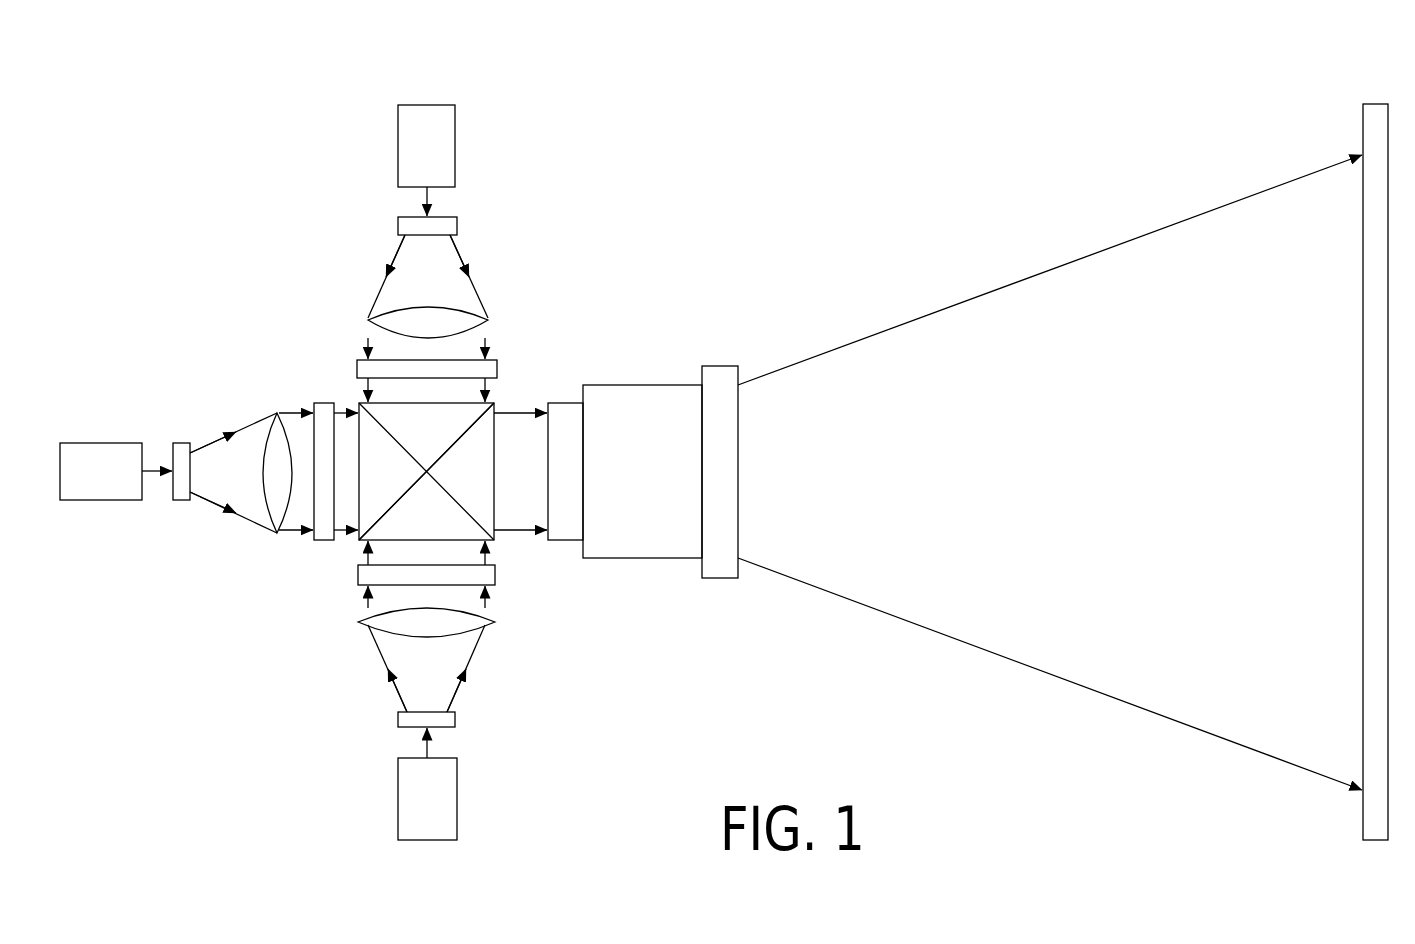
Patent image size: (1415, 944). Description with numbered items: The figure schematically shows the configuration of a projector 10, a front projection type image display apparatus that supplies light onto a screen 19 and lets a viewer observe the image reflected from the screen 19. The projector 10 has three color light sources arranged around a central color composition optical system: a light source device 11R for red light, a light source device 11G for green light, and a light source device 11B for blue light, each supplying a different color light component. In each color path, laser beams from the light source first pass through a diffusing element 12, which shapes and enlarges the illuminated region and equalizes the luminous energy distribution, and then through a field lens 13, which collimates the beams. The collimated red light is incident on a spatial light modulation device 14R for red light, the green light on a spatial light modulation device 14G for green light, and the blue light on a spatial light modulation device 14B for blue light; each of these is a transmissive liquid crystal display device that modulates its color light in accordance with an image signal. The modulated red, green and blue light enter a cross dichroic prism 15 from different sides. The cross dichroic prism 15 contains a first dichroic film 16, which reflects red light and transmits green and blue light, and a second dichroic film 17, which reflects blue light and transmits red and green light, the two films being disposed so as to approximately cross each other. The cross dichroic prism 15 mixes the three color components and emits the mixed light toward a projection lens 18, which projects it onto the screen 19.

The projector 10 is at (243, 134).
The light source device for R light 11R is at (447, 123).
The light source device for G light 11G is at (83, 450).
The light source device for B light 11B is at (410, 808).
The diffusing element 12 is at (449, 228).
The field lens 13 is at (488, 322).
The spatial light modulation device for R light 14R is at (497, 367).
The spatial light modulation device for G light 14G is at (327, 403).
The spatial light modulation device for B light 14B is at (358, 575).
The cross dichroic prism 15 is at (340, 554).
The first dichroic film 16 is at (495, 529).
The second dichroic film 17 is at (496, 410).
The projection lens 18 is at (718, 370).
The screen 19 is at (1378, 108).